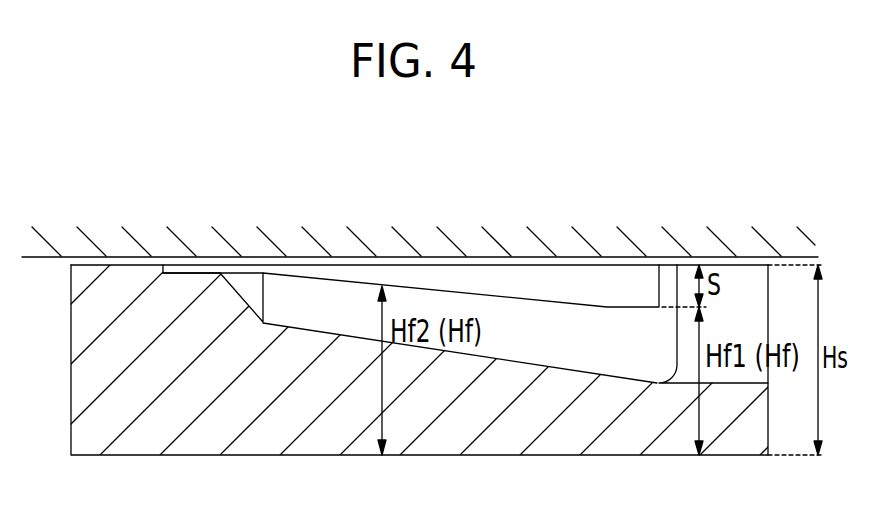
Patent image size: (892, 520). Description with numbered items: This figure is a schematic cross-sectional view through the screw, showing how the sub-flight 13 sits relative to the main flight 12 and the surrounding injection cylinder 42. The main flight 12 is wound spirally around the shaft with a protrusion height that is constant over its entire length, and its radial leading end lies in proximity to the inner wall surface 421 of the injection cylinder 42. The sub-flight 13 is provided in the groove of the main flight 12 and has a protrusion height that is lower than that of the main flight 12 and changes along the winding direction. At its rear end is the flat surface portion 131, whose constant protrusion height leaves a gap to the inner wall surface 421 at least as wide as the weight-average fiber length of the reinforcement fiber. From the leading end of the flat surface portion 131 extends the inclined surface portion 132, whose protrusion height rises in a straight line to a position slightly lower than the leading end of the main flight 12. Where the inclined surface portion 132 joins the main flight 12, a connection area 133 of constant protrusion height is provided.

The injection cylinder 42 is at (484, 200).
The inner wall surface 421 is at (32, 257).
The main flight 12 is at (115, 257).
The sub-flight 13 is at (417, 272).
The flat surface portion 131 is at (628, 307).
The inclined surface portion 132 is at (485, 296).
The connection area 133 is at (200, 272).